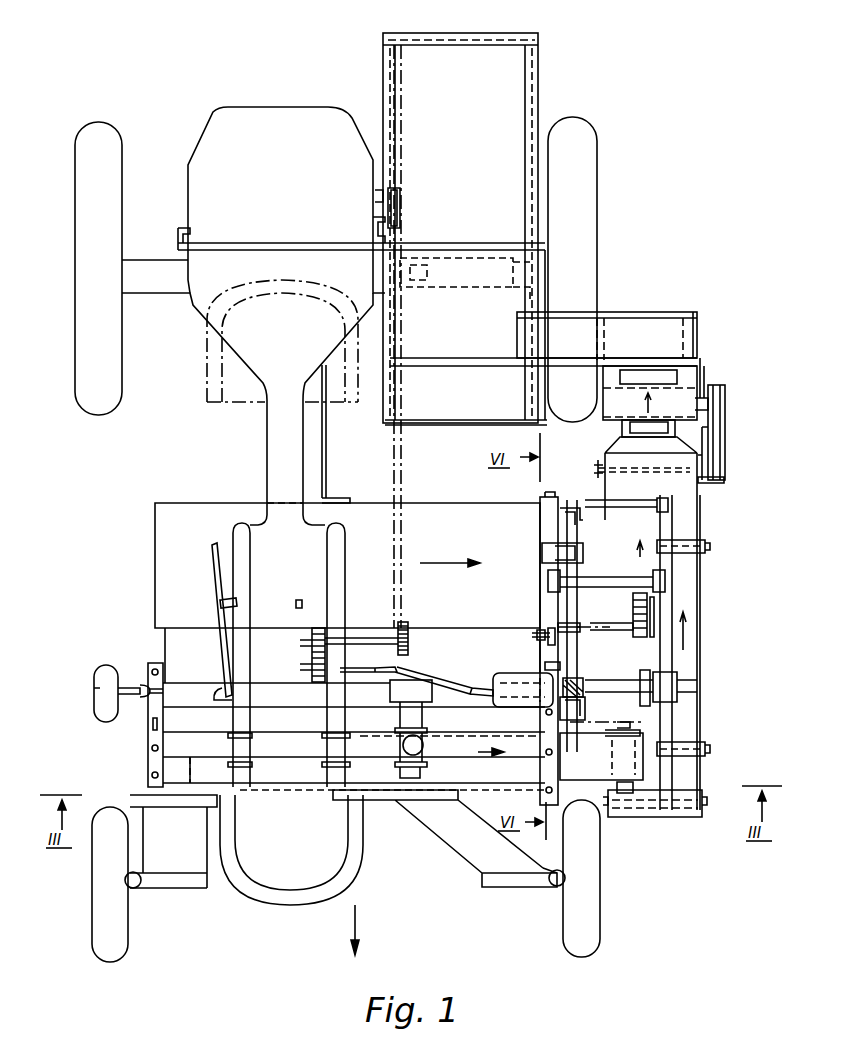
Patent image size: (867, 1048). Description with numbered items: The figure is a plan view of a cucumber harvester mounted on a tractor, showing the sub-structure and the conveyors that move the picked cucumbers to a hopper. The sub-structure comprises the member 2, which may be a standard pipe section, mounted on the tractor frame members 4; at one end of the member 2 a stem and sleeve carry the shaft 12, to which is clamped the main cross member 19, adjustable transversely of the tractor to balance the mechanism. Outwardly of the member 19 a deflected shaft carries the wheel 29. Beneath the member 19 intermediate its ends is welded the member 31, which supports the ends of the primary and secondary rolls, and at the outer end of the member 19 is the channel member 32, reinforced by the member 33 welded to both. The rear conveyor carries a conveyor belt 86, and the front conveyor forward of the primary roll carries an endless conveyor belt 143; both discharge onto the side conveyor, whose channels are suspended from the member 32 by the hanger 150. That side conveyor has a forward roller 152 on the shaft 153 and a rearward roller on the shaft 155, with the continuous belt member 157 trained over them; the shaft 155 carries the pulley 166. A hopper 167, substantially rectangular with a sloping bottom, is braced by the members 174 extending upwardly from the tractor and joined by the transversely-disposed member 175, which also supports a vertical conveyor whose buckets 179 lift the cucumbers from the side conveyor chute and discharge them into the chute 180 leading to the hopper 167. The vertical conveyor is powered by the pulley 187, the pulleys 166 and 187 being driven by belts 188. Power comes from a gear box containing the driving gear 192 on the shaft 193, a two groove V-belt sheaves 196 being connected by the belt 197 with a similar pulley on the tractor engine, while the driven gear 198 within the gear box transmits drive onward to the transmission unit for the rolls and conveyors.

The member 2 is at (288, 742).
The tractor frame members 4 is at (233, 537).
The shaft 12 is at (425, 718).
The main cross member 19 is at (283, 690).
The wheel 29 is at (100, 722).
The member 31 is at (544, 538).
The channel member 32 is at (682, 565).
The member 33 is at (582, 580).
The conveyor belt 86 is at (462, 594).
The endless conveyor belt 143 is at (466, 763).
The hanger 150 is at (708, 551).
The roller 152 is at (678, 815).
The shaft 153 is at (702, 800).
The shaft 155 is at (650, 472).
The belt member 157 is at (690, 683).
The pulley 166 is at (726, 470).
The hopper 167 is at (478, 128).
The members 174 is at (375, 233).
The transversely-disposed member 175 is at (240, 245).
The buckets 179 is at (622, 428).
The chute 180 is at (633, 320).
The pulley 187 is at (724, 396).
The belts 188 is at (722, 426).
The driving gear 192 is at (318, 628).
The shaft 193 is at (386, 630).
The two groove V-belt sheaves 196 is at (398, 190).
The belt 197 is at (405, 463).
The driven gear 198 is at (384, 200).